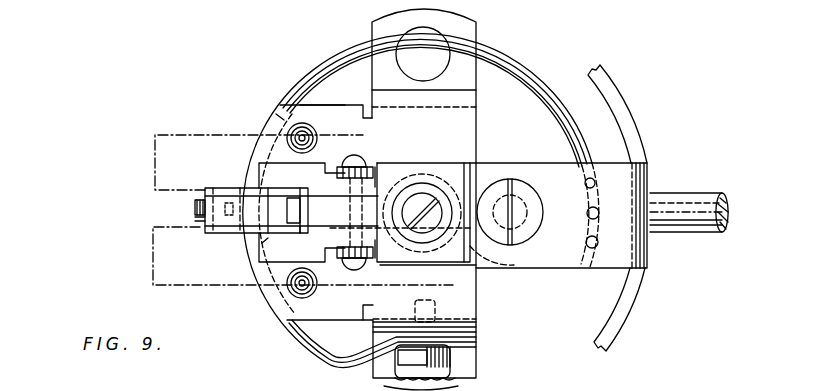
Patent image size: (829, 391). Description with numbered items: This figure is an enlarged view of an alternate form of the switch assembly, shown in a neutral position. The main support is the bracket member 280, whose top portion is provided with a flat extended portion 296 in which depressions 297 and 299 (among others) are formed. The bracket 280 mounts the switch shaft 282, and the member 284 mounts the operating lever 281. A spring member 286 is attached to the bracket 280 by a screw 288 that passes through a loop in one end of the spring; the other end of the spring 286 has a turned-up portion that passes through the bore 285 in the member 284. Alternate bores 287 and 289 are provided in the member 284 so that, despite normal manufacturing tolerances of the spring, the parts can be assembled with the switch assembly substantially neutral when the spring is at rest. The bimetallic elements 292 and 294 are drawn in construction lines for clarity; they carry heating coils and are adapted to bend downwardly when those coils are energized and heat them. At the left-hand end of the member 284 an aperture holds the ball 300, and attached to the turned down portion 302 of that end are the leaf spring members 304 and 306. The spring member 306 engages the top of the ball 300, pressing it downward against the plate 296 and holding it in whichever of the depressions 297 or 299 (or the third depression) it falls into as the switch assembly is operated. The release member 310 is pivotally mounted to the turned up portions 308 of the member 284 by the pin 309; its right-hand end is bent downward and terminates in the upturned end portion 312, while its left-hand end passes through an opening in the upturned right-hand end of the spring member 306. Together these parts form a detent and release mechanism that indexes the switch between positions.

The bracket member 280 is at (478, 120).
The operating lever 281 is at (695, 200).
The switch shaft 282 is at (478, 253).
The member 284 is at (582, 268).
The bore 285 is at (587, 213).
The spring member 286 is at (503, 56).
The alternate bore 287 is at (585, 183).
The screw 288 is at (452, 351).
The alternate bore 289 is at (586, 242).
The bimetallic element 292 is at (154, 170).
The bimetallic element 294 is at (153, 252).
The flat extended portion 296 is at (341, 113).
The depression 297 is at (306, 297).
The depression 299 is at (280, 120).
The ball 300 is at (248, 243).
The turned down portion 302 is at (227, 190).
The leaf spring member 304 is at (252, 207).
The leaf spring member 306 is at (262, 243).
The turned up portion 308 is at (373, 160).
The pin 309 is at (330, 235).
The release member 310 is at (446, 175).
The upturned end portion 312 is at (472, 180).